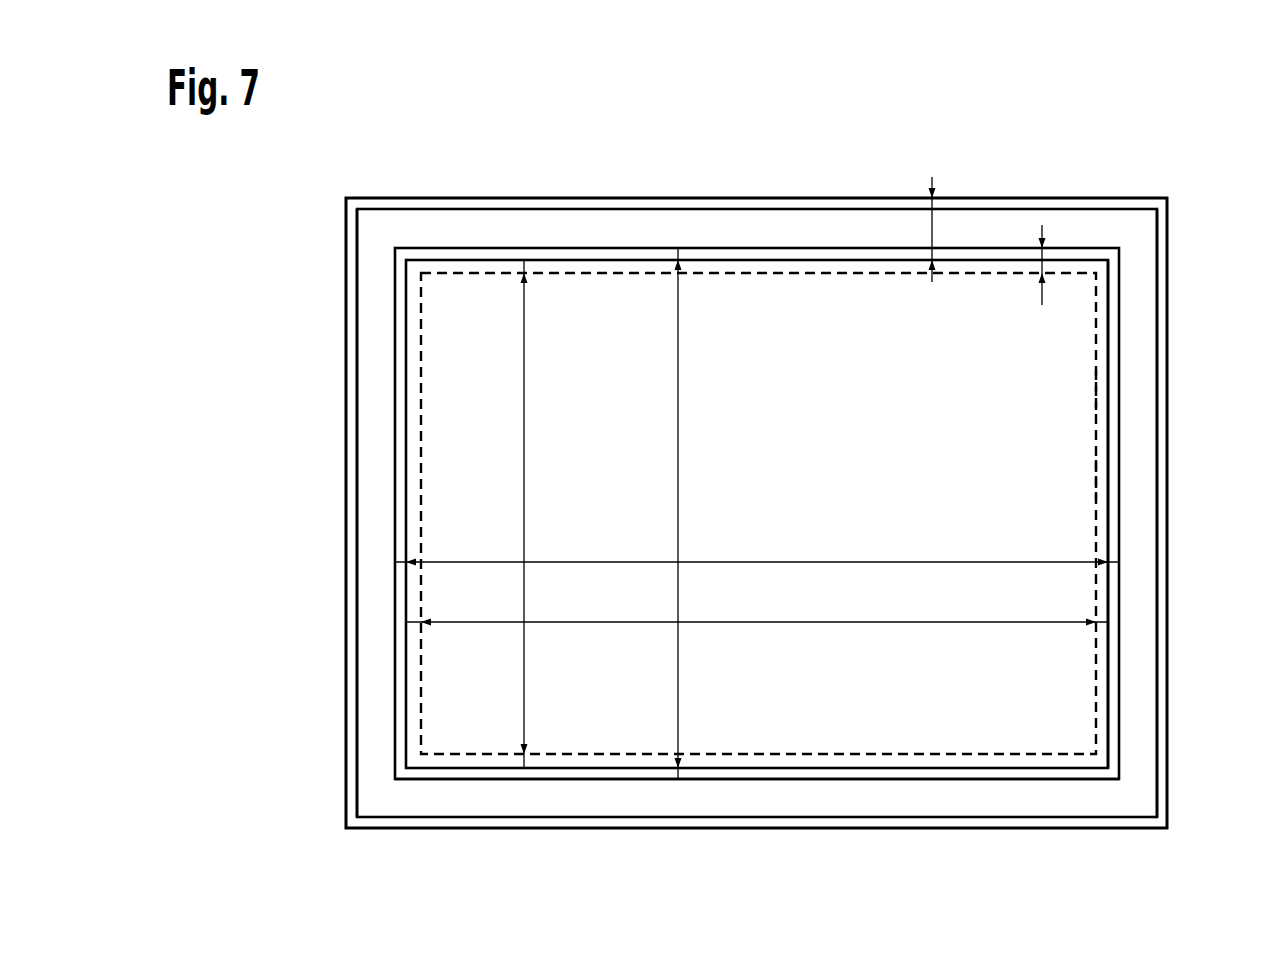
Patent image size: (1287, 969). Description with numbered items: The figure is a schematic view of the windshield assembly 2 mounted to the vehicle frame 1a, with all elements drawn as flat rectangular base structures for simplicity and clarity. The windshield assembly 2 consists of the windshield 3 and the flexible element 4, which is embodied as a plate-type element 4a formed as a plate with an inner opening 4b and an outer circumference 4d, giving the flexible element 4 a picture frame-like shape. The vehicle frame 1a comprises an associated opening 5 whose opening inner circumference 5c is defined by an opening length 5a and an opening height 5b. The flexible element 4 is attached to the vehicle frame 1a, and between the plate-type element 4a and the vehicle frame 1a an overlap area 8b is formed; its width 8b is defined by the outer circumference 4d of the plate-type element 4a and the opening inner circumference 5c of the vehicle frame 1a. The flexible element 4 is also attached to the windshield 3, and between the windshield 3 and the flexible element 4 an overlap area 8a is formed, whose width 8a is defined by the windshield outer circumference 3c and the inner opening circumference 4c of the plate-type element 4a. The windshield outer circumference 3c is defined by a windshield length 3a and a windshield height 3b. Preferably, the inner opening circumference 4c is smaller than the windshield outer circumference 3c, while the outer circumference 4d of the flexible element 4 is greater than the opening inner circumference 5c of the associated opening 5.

The windshield assembly 2 is at (436, 165).
The vehicle frame 1a is at (1170, 586).
The windshield 3 is at (442, 691).
The windshield length 3a is at (826, 622).
The windshield height 3b is at (524, 695).
The windshield outer circumference 3c is at (1117, 313).
The flexible element 4 is at (372, 482).
The plate-type element 4a is at (372, 363).
The inner opening 4b is at (1085, 483).
The inner opening circumference 4c is at (1085, 390).
The outer circumference 4d is at (1166, 405).
The associated opening 5 is at (1120, 693).
The opening length 5a is at (826, 562).
The opening height 5b is at (678, 431).
The opening inner circumference 5c is at (1016, 768).
The overlap area 8a is at (1042, 263).
The overlap area 8b is at (932, 232).